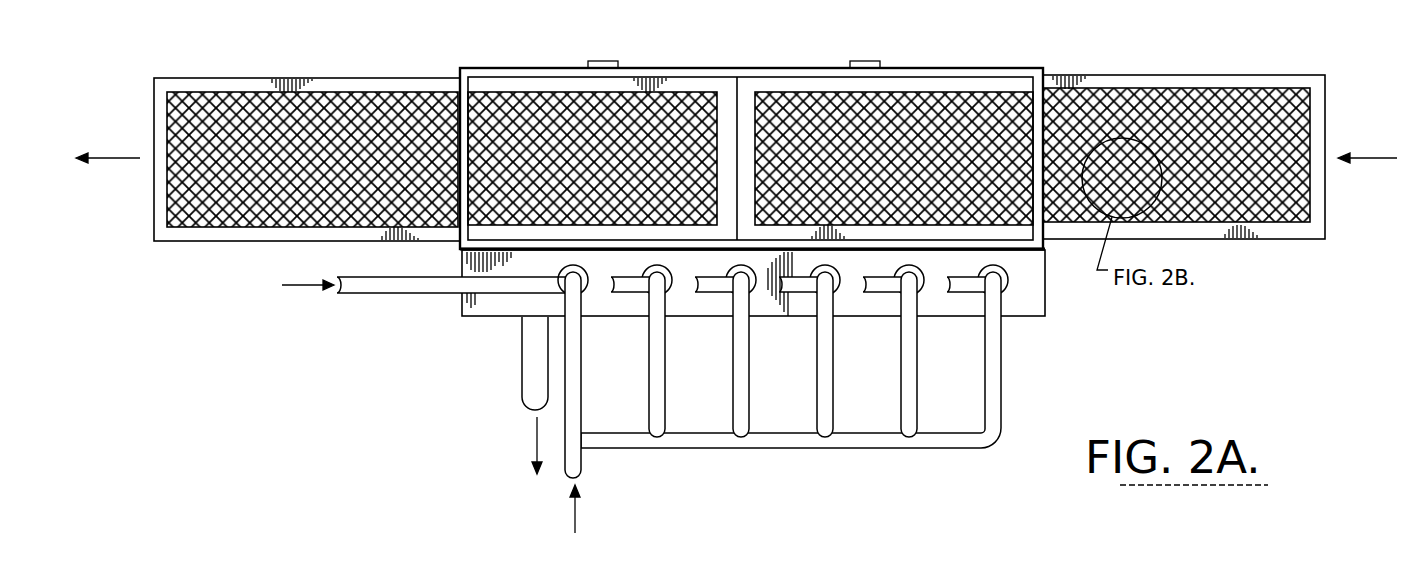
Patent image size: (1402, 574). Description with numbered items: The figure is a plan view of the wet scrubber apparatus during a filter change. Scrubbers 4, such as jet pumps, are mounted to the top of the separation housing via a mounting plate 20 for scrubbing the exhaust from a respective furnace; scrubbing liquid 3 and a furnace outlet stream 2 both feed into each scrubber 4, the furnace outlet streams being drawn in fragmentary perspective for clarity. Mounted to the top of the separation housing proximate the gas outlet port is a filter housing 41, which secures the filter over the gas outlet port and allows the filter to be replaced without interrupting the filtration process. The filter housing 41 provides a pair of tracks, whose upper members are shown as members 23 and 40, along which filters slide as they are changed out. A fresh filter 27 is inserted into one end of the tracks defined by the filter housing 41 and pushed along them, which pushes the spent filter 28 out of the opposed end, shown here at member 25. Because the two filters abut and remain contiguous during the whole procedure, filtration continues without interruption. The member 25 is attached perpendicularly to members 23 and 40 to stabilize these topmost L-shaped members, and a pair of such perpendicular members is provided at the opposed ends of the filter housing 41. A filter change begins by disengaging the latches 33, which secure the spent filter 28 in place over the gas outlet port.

The furnace outlet stream 2 is at (308, 289).
The scrubbing liquid 3 is at (579, 527).
The scrubber 4 is at (1004, 288).
The mounting plate 20 is at (1037, 303).
The upper track member 23 is at (1026, 68).
The perpendicular member 25 is at (461, 80).
The fresh filter 27 is at (1200, 62).
The spent filter 28 is at (347, 72).
The latch 33 is at (606, 61).
The upper track member 40 is at (1018, 243).
The filter housing 41 is at (749, 48).